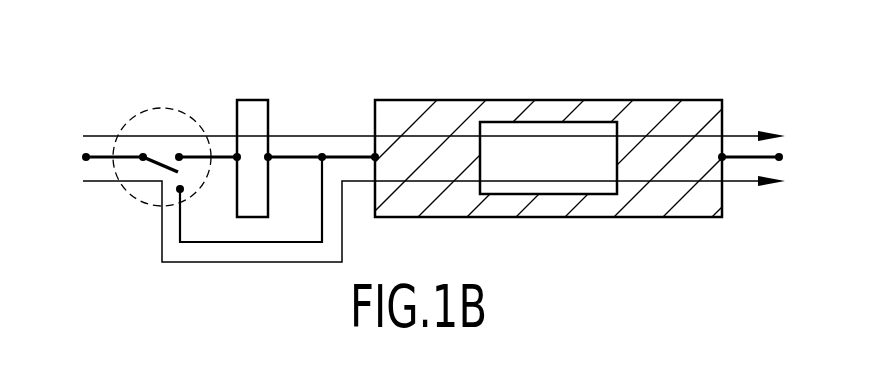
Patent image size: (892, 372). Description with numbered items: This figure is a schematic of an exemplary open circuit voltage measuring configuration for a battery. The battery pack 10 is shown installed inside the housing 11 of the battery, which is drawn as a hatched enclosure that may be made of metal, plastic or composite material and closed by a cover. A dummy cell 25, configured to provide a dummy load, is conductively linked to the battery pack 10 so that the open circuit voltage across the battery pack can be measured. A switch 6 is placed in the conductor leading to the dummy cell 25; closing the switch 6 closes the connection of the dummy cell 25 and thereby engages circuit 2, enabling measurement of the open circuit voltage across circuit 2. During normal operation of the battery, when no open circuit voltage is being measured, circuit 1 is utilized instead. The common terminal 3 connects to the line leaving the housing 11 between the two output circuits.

The circuit 1 is at (770, 136).
The circuit 2 is at (771, 182).
The common terminal 3 is at (783, 157).
The switch 6 is at (160, 110).
The battery pack 10 is at (562, 168).
The housing 11 is at (653, 100).
The dummy cell 25 is at (252, 100).